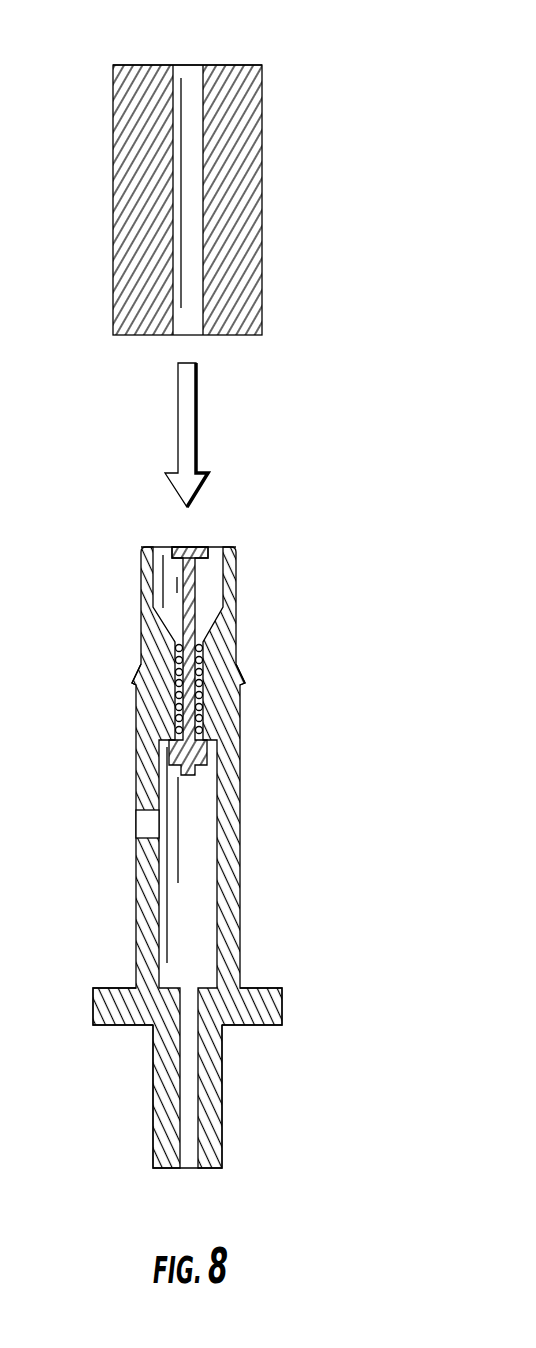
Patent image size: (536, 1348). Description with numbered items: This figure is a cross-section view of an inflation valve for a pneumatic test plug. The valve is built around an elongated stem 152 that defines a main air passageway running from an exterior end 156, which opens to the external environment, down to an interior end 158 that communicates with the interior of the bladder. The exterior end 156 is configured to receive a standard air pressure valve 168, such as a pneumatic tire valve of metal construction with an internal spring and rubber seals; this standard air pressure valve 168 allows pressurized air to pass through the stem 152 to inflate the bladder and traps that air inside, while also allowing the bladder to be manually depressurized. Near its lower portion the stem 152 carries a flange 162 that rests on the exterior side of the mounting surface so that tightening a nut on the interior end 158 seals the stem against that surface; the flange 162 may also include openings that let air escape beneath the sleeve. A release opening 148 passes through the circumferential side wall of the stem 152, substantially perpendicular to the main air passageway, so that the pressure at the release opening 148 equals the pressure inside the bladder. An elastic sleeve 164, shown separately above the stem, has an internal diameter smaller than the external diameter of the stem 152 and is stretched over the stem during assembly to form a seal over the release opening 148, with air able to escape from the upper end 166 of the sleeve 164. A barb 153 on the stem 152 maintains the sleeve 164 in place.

The sleeve 164 is at (262, 178).
The upper end of the sleeve 166 is at (223, 65).
The exterior end 156 is at (208, 547).
The standard air pressure valve 168 is at (198, 613).
The barb 153 is at (245, 684).
The stem portion 152 is at (240, 808).
The release opening 148 is at (145, 822).
The flange 162 is at (282, 1008).
The interior end 158 is at (200, 1168).